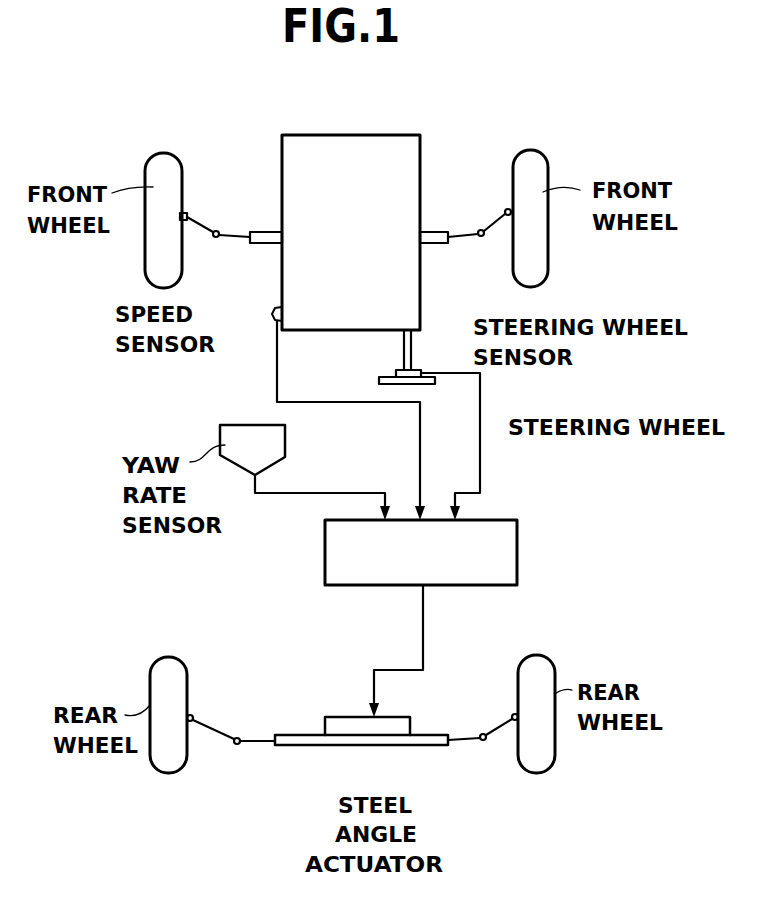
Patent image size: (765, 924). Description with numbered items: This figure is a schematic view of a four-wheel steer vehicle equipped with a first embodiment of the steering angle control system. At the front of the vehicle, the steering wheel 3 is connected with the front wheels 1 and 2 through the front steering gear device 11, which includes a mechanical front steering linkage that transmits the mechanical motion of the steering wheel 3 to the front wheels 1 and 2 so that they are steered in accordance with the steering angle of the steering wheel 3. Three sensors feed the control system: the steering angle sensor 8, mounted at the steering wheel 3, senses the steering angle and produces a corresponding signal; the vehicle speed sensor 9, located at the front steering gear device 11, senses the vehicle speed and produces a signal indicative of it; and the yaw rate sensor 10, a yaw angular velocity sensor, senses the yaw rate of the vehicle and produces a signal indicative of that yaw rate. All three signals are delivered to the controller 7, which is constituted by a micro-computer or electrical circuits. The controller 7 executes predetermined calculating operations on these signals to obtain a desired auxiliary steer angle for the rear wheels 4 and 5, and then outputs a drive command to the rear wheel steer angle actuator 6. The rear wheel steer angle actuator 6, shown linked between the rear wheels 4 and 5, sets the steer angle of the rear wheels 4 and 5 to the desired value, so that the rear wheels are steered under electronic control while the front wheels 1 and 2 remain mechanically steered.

The front wheel 1 is at (163, 153).
The front wheel 2 is at (525, 150).
The steering wheel 3 is at (506, 425).
The rear wheel 4 is at (170, 773).
The rear wheel 5 is at (538, 773).
The rear wheel steer angle actuator 6 is at (377, 745).
The controller 7 is at (519, 553).
The steering angle sensor 8 is at (415, 371).
The vehicle speed sensor 9 is at (272, 313).
The yaw rate sensor 10 is at (226, 431).
The front steering gear device 11 is at (418, 137).